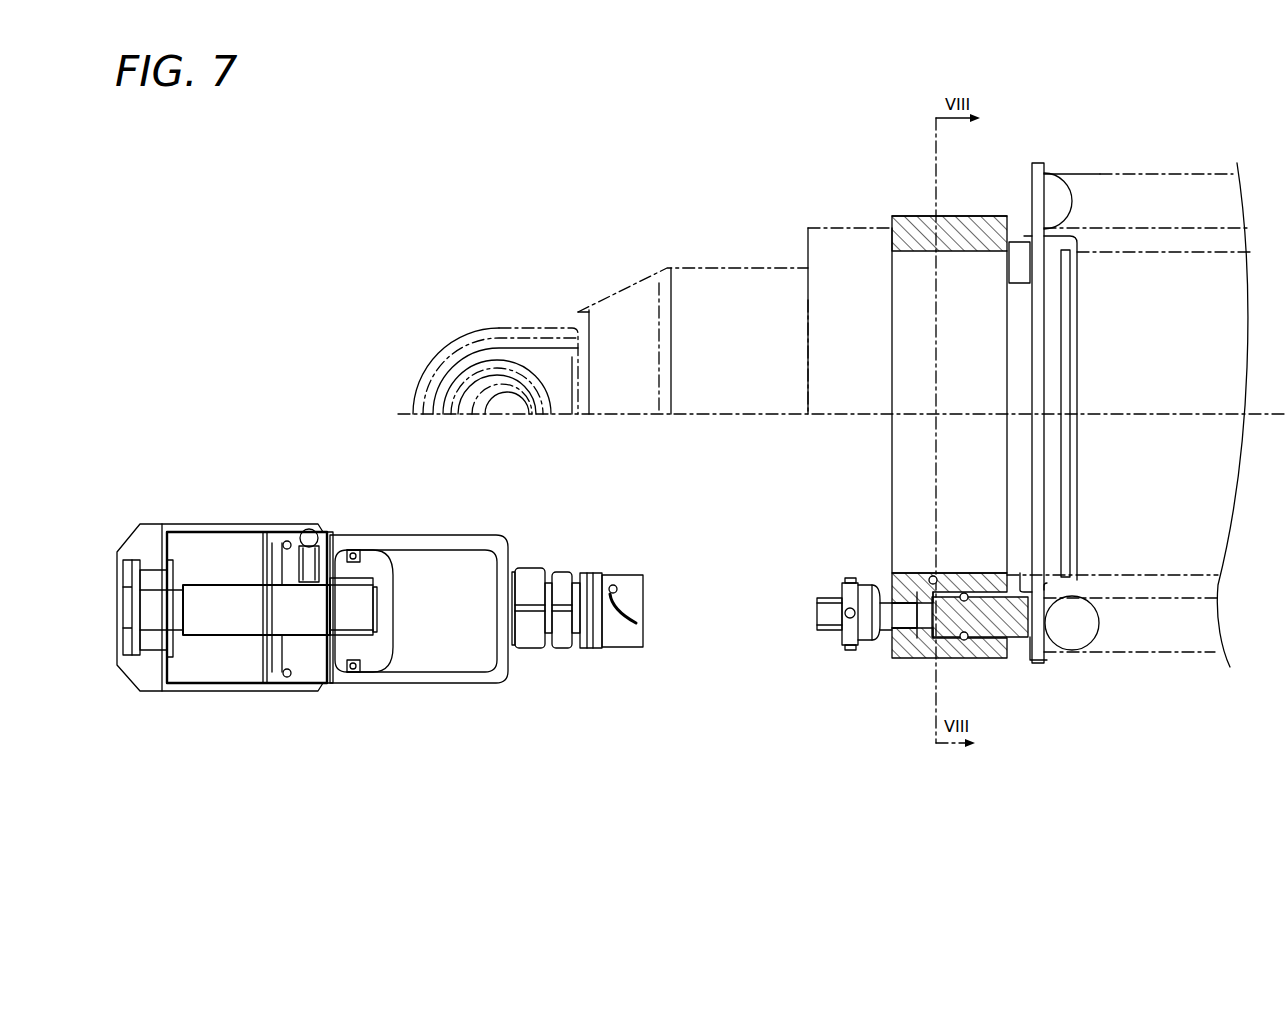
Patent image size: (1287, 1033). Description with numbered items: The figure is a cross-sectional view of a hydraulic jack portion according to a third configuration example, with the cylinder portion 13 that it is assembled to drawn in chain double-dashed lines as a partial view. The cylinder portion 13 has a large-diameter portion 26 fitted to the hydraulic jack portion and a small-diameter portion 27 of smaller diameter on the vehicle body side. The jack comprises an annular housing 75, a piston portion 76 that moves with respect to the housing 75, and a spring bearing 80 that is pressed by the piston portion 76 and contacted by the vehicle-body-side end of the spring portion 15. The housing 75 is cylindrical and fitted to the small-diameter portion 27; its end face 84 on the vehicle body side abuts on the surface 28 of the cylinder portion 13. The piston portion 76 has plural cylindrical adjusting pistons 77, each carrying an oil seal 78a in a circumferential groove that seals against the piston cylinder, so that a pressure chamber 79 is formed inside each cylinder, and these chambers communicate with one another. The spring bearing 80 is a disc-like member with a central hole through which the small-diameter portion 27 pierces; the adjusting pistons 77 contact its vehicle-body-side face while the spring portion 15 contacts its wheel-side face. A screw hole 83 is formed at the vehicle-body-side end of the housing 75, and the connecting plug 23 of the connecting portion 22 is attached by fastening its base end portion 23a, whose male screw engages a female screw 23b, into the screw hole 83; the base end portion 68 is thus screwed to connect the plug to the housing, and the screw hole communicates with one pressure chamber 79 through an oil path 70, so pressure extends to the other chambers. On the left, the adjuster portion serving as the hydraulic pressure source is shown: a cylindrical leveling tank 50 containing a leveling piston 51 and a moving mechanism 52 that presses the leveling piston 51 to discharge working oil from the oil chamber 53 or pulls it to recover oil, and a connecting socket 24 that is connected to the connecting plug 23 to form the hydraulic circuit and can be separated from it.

The cylinder portion 13 is at (822, 203).
The spring portion 15 is at (1088, 648).
The connecting portion 22 is at (862, 668).
The connecting plug 23 is at (822, 640).
The base end portion (male screw) 23a is at (880, 731).
The female screw 23b is at (905, 660).
The connecting socket 24 is at (615, 580).
The large-diameter portion 26 is at (853, 228).
The small-diameter portion 27 is at (1166, 255).
The surface of the cylinder 28 is at (907, 222).
The leveling tank 50 is at (496, 680).
The leveling piston 51 is at (383, 657).
The moving mechanism 52 is at (306, 505).
The oil chamber 53 is at (454, 570).
The base end portion 68 is at (892, 573).
The oil path 70 is at (892, 495).
The housing 75 is at (958, 216).
The piston portion 76 is at (1022, 670).
The adjusting piston 77 is at (1017, 234).
The oil seal 78a is at (996, 660).
The pressure chamber 79 is at (927, 632).
The spring bearing 80 is at (1040, 663).
The screw hole 83 is at (897, 622).
The end face 84 is at (892, 222).